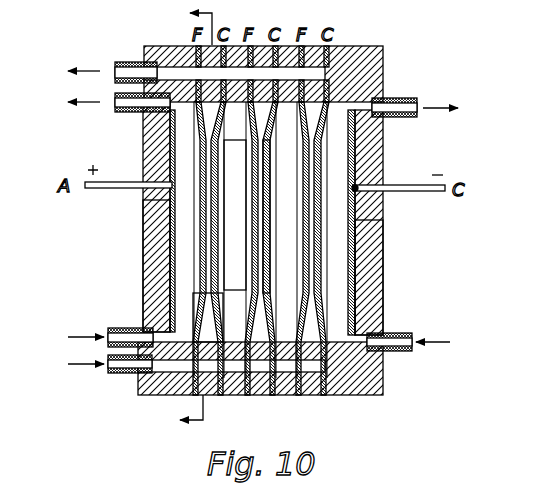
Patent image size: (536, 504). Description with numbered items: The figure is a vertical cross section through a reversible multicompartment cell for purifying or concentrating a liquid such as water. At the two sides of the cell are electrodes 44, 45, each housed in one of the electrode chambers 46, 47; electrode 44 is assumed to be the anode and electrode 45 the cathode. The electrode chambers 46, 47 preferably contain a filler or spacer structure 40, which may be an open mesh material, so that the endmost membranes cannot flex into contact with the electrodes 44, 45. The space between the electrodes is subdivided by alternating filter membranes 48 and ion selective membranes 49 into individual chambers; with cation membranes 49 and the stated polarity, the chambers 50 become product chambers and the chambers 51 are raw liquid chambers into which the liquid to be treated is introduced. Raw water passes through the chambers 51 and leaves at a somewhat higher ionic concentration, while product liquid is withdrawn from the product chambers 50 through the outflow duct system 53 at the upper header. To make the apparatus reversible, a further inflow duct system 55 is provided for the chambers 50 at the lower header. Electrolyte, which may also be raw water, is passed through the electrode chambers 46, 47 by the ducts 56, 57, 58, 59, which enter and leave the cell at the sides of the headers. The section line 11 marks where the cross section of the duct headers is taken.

The section line 11- 11 is at (183, 217).
The filler or spacer structure 40 is at (180, 208).
The electrode 44 is at (168, 145).
The electrode 45 is at (355, 160).
The electrode chamber 46 is at (180, 257).
The electrode chamber 47 is at (340, 290).
The filter membrane 48 is at (259, 155).
The ion selective membrane 49 is at (311, 183).
The product chamber 50 is at (262, 282).
The raw liquid chamber 51 is at (240, 240).
The outflow duct system 53 is at (135, 62).
The inflow duct system 55 is at (137, 370).
The electrolyte duct 56 is at (128, 328).
The electrolyte duct 57 is at (122, 112).
The electrolyte duct 58 is at (400, 350).
The electrolyte duct 59 is at (398, 98).